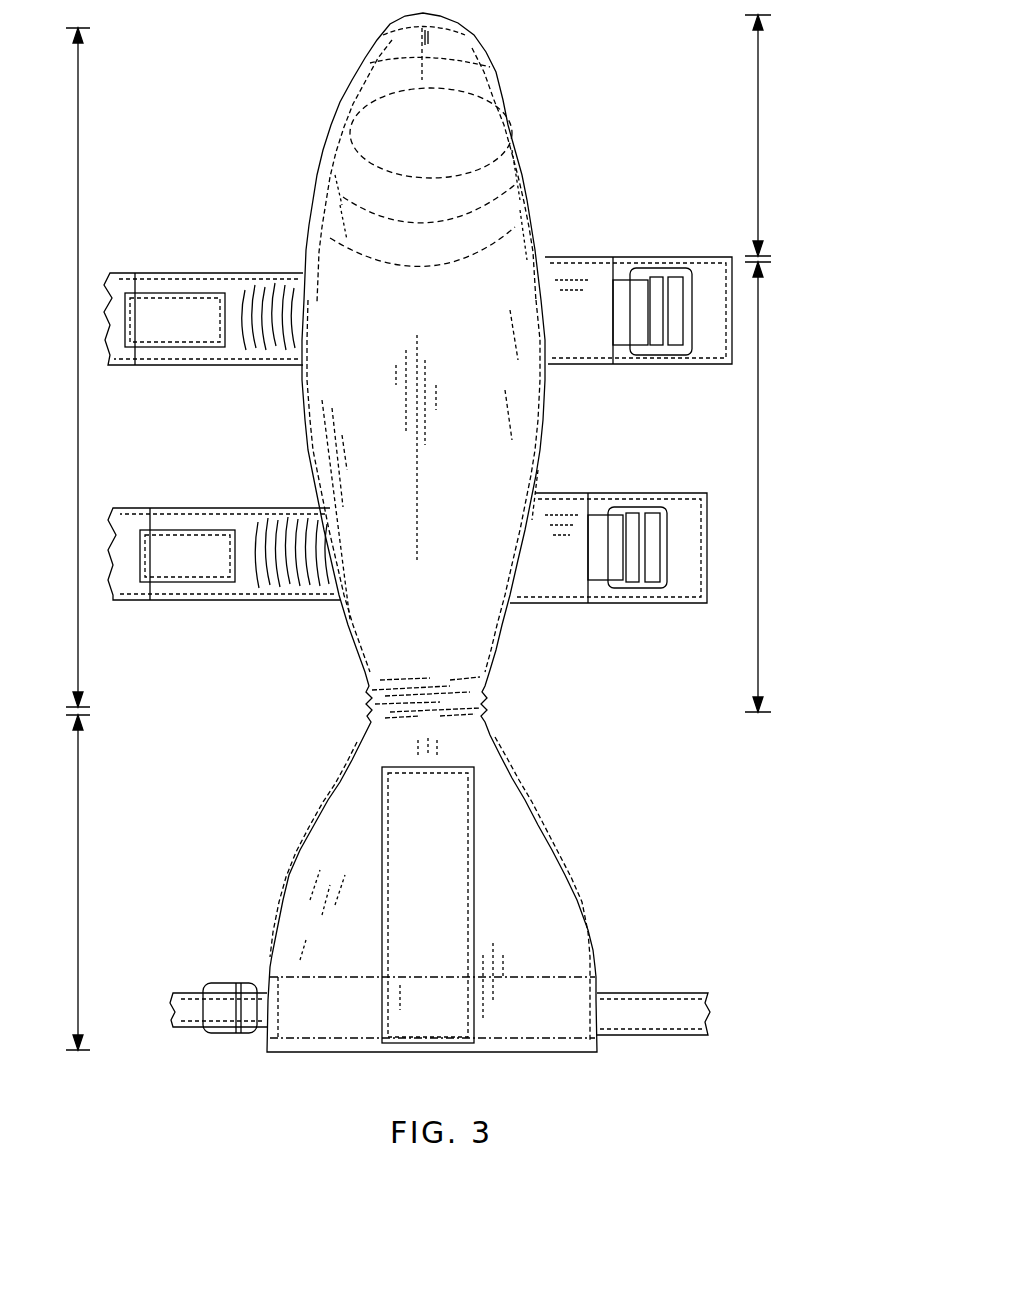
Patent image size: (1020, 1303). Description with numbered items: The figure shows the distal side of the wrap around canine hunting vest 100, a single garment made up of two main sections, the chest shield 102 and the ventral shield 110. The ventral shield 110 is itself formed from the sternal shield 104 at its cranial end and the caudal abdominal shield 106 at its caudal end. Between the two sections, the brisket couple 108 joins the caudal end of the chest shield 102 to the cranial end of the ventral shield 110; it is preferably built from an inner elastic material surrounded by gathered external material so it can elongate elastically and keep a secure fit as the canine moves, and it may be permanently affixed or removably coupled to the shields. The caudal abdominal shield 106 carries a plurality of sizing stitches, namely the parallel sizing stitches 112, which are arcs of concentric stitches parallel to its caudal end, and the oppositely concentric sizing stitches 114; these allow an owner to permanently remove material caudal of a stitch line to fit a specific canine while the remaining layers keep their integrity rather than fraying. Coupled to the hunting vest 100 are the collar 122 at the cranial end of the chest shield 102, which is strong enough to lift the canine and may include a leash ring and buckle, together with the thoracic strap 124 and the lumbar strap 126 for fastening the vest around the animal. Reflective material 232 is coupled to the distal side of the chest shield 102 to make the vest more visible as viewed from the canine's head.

The wrap around canine hunting vest 100 is at (222, 141).
The chest shield 102 is at (523, 870).
The sternal shield 104 is at (528, 432).
The caudal abdominal shield 106 is at (395, 40).
The brisket couple 108 is at (485, 699).
The ventral shield 110 is at (57, 367).
The parallel sizing stitches 112 is at (445, 55).
The oppositely concentric sizing stitches 114 is at (447, 178).
The collar 122 is at (637, 993).
The thoracic strap 124 is at (186, 603).
The lumbar strap 126 is at (183, 262).
The reflective material 232 is at (442, 1023).